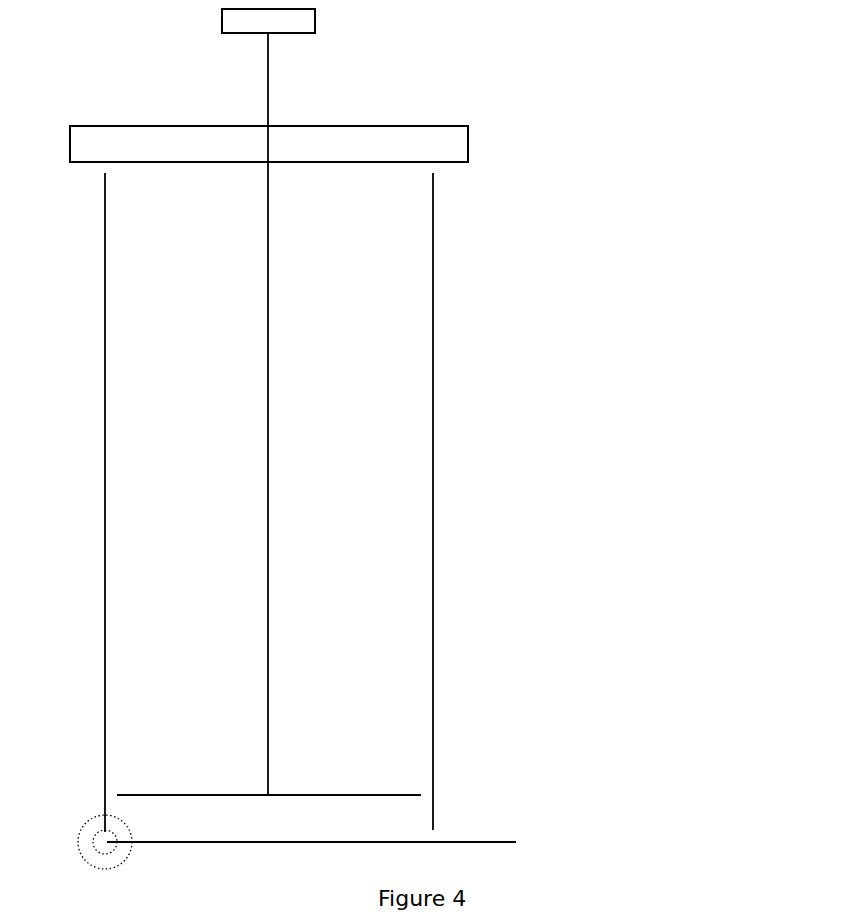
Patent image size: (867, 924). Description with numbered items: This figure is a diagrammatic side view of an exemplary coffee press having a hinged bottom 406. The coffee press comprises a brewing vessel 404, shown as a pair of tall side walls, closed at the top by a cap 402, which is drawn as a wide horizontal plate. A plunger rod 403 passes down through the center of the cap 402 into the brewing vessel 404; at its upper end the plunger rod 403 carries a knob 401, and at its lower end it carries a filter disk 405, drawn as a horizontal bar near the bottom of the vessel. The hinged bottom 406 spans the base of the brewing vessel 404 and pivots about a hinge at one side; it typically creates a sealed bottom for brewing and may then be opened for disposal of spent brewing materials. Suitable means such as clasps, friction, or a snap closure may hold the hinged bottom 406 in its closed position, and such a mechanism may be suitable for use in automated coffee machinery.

The knob 401 is at (318, 21).
The cap 402 is at (366, 124).
The plunger rod 403 is at (272, 394).
The brewing vessel 404 is at (437, 523).
The filter disk 405 is at (330, 792).
The hinged bottom 406 is at (484, 839).